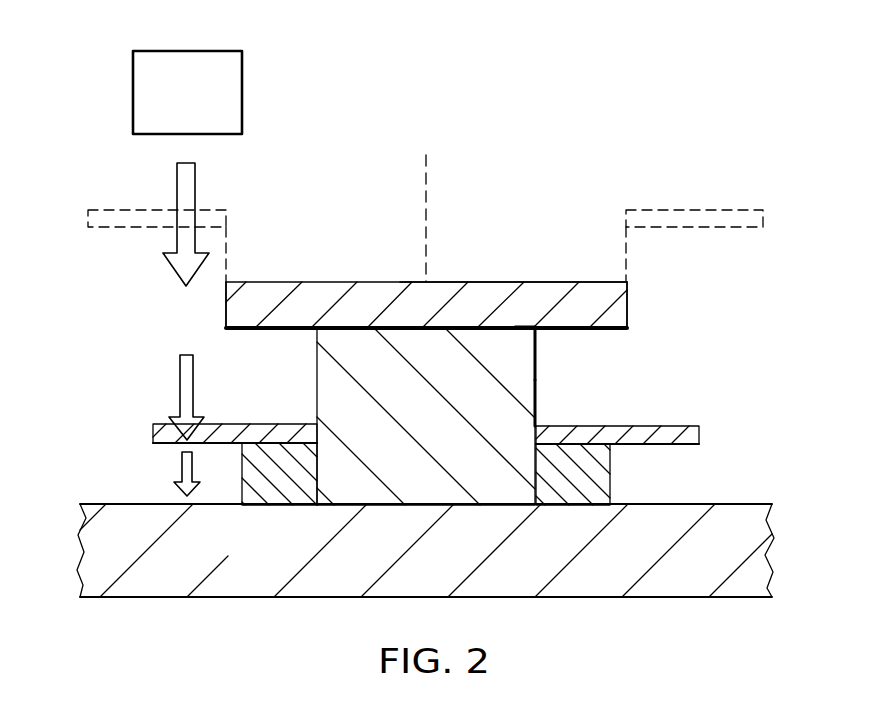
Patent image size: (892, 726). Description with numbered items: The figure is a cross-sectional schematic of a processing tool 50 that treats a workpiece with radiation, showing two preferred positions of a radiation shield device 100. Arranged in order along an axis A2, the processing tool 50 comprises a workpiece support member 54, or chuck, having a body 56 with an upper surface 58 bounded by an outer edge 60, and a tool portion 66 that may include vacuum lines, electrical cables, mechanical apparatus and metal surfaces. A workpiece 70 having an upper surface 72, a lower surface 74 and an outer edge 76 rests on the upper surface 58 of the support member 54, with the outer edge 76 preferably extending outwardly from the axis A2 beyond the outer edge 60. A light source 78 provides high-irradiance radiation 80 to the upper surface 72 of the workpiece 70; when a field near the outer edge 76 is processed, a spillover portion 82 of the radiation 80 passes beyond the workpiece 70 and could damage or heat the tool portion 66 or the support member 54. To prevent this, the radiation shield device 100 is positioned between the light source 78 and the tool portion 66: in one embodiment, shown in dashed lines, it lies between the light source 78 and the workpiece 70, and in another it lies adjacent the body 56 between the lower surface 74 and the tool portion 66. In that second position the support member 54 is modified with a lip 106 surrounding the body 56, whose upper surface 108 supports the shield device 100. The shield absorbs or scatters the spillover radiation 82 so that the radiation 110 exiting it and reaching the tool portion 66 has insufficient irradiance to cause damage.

The processing tool 50 is at (427, 321).
The workpiece support member 54 is at (566, 373).
The body 56 is at (537, 397).
The upper surface 58 is at (507, 329).
The outer edge 60 is at (556, 334).
The tool portion 66 is at (725, 504).
The workpiece 70 is at (488, 280).
The upper surface 72 is at (558, 280).
The lower surface 74 is at (613, 329).
The outer edge 76 is at (226, 305).
The light source 78 is at (169, 98).
The high-irradiance radiation 80 is at (177, 192).
The spillover high-irradiance radiation portion 82 is at (178, 381).
The radiation shield device 100 is at (88, 221).
The lip 106 is at (242, 480).
The upper surface 108 is at (292, 440).
The radiation 110 is at (181, 471).
The axis A2 is at (426, 161).